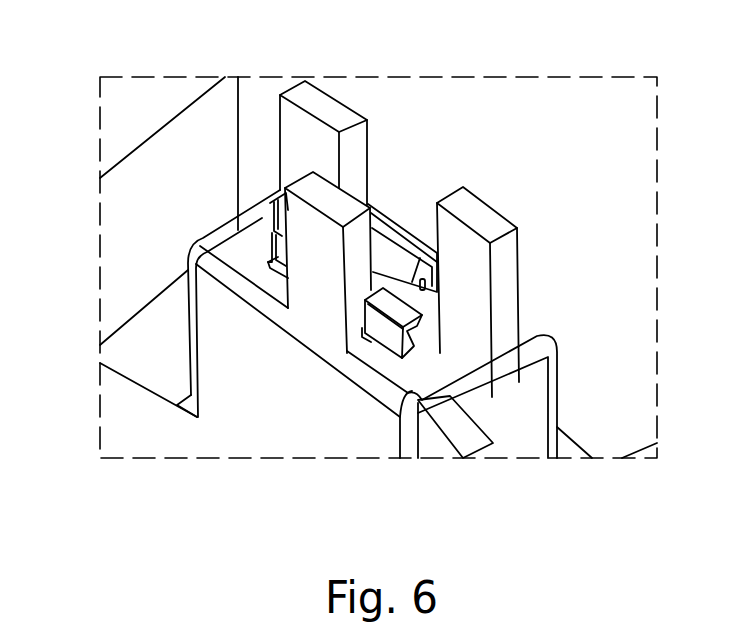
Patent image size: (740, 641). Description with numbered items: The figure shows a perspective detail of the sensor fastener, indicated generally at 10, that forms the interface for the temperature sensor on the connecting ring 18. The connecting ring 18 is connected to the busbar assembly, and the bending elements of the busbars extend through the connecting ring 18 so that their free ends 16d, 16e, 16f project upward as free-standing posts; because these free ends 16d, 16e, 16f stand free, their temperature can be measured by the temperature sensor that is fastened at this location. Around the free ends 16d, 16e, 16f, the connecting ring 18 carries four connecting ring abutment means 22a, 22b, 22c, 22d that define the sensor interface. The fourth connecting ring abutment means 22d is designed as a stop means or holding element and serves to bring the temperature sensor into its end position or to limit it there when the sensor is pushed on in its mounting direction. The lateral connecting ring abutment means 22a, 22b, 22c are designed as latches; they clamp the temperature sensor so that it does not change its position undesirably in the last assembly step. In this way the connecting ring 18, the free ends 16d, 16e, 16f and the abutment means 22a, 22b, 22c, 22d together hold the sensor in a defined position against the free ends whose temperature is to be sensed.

The connector assembly 10 is at (141, 492).
The free end 16d is at (360, 139).
The free end 16e is at (332, 305).
The free end 16f is at (499, 272).
The connecting ring 18 is at (503, 415).
The connecting ring abutment means 22a is at (387, 323).
The connecting ring abutment means 22b is at (402, 262).
The connecting ring abutment means 22c is at (273, 248).
The fourth connecting ring abutment means 22d is at (278, 222).